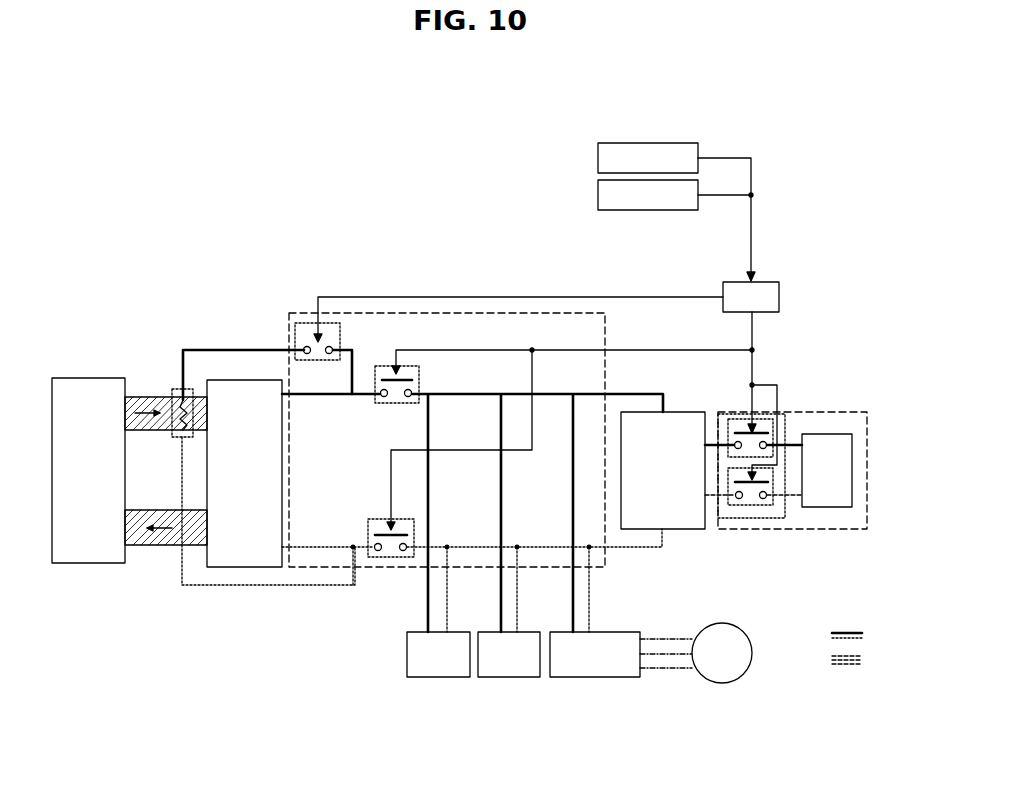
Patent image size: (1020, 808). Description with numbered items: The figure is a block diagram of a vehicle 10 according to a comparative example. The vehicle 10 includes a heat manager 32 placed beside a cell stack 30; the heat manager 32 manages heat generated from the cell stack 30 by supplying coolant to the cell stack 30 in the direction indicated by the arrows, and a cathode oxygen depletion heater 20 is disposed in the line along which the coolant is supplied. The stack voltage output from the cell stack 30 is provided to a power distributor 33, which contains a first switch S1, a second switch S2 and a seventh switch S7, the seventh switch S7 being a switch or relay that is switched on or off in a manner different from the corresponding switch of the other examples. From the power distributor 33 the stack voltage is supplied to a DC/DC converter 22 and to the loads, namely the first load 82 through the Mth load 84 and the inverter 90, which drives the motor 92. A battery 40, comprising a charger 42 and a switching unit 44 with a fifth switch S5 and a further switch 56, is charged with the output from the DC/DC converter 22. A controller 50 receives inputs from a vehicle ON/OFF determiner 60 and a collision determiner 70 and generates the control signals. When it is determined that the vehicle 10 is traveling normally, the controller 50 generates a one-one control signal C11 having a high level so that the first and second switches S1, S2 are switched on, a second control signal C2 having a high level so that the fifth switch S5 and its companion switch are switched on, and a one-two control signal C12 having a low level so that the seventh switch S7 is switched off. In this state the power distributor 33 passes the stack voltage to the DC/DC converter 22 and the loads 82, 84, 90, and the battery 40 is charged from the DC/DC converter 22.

The vehicle 10 is at (416, 143).
The cathode oxygen depletion (COD) heater 20 is at (183, 390).
The cell stack 30 is at (250, 567).
The heat manager 32 is at (93, 563).
The power distributor 33 is at (510, 313).
The first switch S1 is at (392, 404).
The second switch S2 is at (380, 519).
The seventh switch S7 is at (341, 335).
The fifth switch S5 is at (775, 430).
The AC relay switch 56 is at (752, 505).
The DC/DC converter 22 is at (688, 529).
The battery 40 is at (848, 412).
The charger 42 is at (853, 488).
The switching unit 44 is at (785, 518).
The controller 50 is at (775, 283).
The vehicle ON/OFF determiner 60 is at (598, 157).
The collision determiner 70 is at (598, 194).
The first load 82 is at (437, 677).
The Mth load 84 is at (508, 677).
The inverter 90 is at (601, 677).
The motor 92 is at (703, 683).
The 1-1st control signal C11 is at (690, 349).
The 1-2nd control signal C12 is at (690, 297).
The second control signal C2 is at (754, 355).